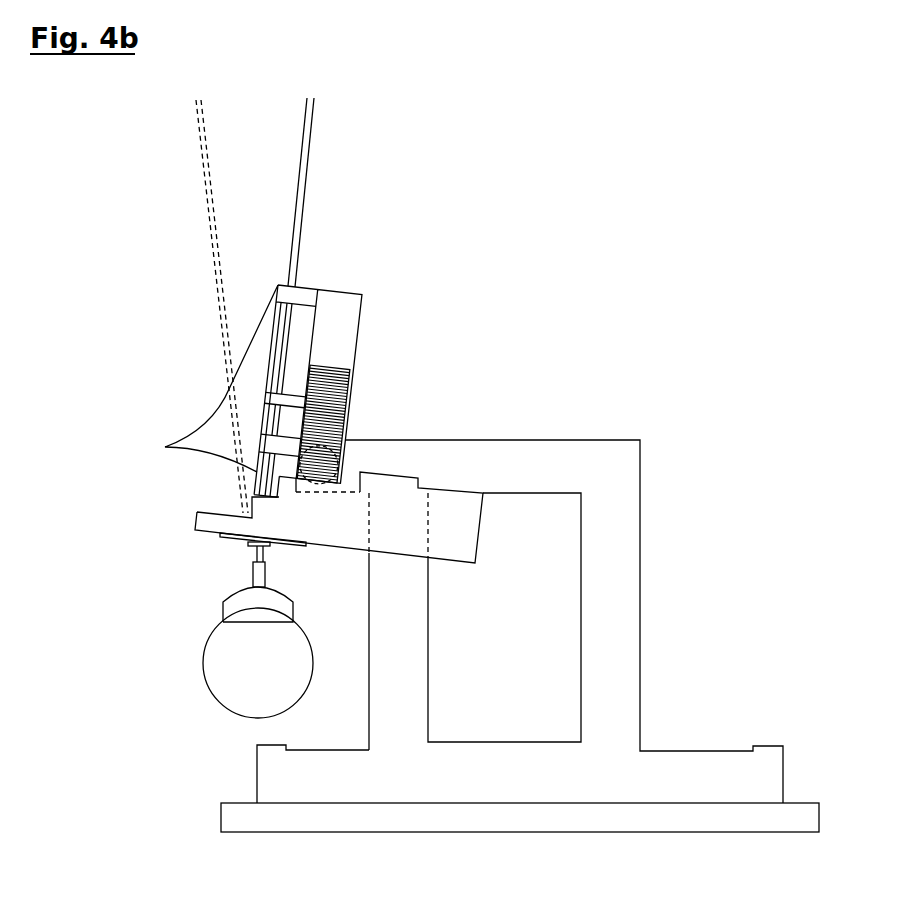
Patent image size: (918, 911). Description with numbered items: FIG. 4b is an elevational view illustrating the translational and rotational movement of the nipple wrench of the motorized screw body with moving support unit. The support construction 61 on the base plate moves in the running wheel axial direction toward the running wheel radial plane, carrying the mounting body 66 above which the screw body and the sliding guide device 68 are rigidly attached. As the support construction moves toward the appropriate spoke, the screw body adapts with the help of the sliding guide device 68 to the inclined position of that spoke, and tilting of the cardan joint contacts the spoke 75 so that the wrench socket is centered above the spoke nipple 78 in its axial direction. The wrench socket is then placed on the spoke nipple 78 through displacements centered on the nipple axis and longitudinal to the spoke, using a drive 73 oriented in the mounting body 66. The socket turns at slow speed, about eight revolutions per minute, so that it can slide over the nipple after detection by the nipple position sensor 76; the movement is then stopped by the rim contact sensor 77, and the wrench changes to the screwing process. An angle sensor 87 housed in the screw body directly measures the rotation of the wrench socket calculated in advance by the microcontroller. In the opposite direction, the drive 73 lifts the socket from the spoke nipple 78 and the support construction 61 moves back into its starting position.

The support construction 61 is at (624, 460).
The mounting body 66 is at (347, 337).
The sliding guide device 68 is at (221, 433).
The drive 73 is at (350, 398).
The spoke 75 is at (310, 132).
The nipple position sensor 76 is at (220, 537).
The rim contact sensor 77 is at (252, 543).
The spoke nipple 78 is at (257, 573).
The angle sensor 87 is at (352, 513).